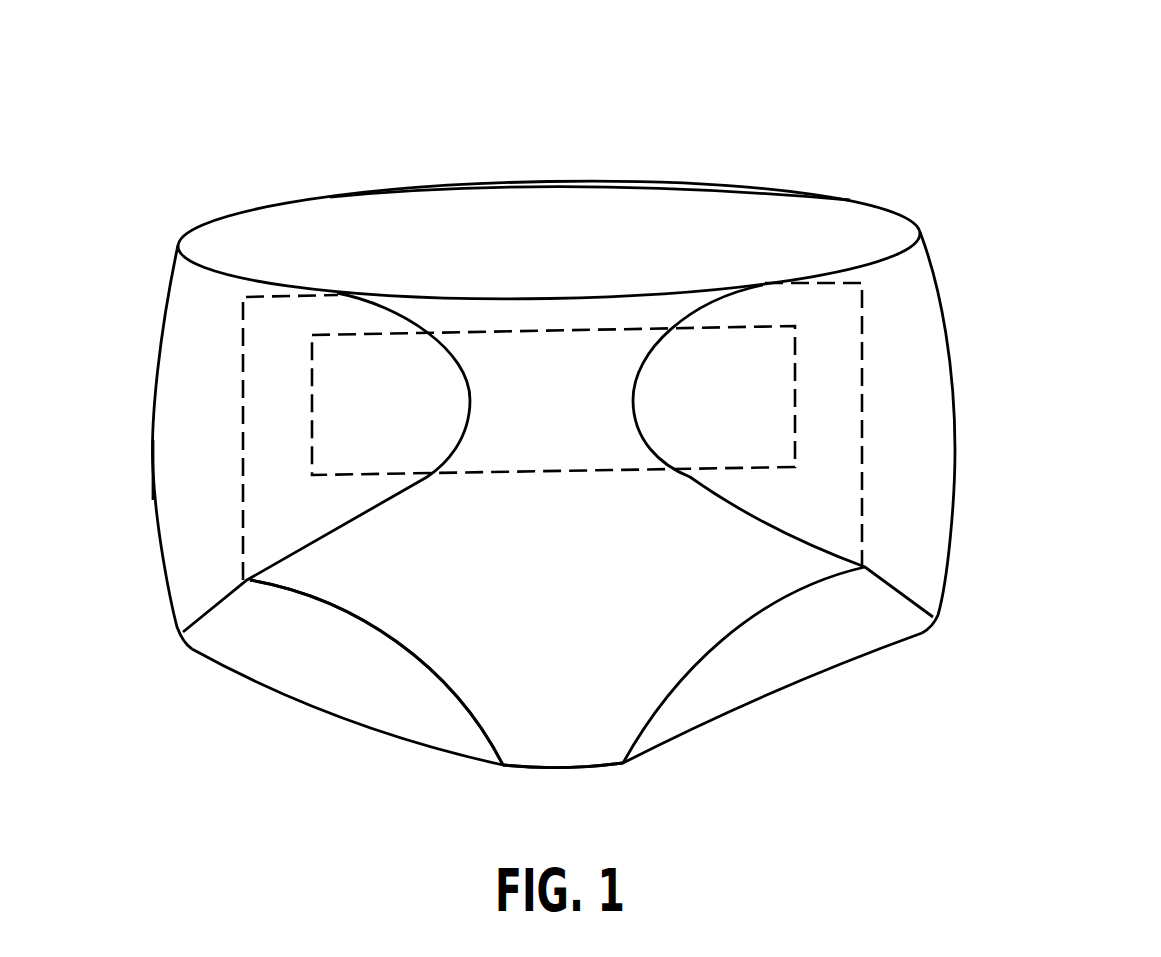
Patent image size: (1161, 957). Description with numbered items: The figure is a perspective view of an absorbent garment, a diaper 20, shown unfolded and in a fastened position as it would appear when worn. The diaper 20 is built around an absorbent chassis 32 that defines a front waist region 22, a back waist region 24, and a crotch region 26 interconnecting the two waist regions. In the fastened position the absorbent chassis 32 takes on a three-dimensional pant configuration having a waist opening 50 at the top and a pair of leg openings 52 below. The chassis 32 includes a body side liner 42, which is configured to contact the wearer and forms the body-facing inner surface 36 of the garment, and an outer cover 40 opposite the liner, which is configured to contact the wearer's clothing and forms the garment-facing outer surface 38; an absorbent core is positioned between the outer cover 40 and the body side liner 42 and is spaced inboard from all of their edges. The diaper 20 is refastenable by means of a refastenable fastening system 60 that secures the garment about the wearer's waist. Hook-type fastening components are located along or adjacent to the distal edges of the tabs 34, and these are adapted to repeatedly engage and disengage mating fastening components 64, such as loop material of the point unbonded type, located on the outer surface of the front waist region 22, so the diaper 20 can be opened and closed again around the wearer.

The diaper 20 is at (716, 80).
The front waist region 22 is at (550, 298).
The back waist region 24 is at (757, 200).
The crotch region 26 is at (527, 743).
The absorbent chassis 32 is at (372, 585).
The tabs 34 is at (433, 423).
The body-facing inner surface 36 is at (287, 247).
The garment-facing outer surface 38 is at (183, 454).
The outer cover 40 is at (603, 718).
The body side liner 42 is at (523, 197).
The waist opening 50 is at (424, 200).
The leg openings 52 is at (343, 700).
The refastenable fastening system 60 is at (598, 430).
The mating fastening components 64 is at (487, 370).